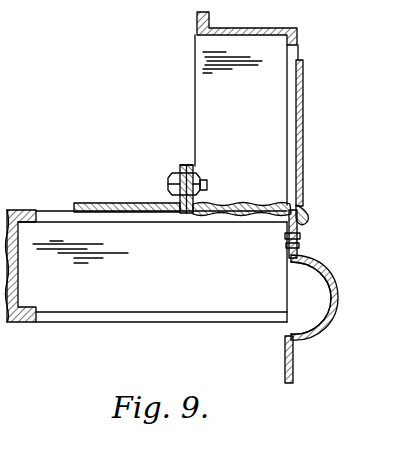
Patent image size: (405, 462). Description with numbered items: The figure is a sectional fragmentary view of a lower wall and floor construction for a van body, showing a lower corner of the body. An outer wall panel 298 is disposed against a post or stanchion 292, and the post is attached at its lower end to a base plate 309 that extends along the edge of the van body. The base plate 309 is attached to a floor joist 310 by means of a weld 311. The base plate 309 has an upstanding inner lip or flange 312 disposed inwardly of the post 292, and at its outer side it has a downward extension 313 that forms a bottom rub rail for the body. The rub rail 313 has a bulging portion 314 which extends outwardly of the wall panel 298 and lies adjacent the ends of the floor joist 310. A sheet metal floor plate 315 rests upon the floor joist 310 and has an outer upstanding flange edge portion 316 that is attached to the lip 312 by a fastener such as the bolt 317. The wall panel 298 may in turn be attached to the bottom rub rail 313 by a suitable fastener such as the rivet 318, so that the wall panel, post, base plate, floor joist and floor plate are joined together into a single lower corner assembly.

The post or stanchion 292 is at (196, 51).
The outer wall panel 298 is at (303, 142).
The base plate 309 is at (308, 210).
The floor joist 310 is at (211, 322).
The weld 311 is at (237, 225).
The inner lip or flange 312 is at (190, 168).
The bottom rub rail 313 is at (316, 260).
The bulging portion 314 is at (327, 290).
The sheet metal floor plate 315 is at (95, 204).
The upstanding flange edge portion 316 is at (184, 167).
The bolt 317 is at (168, 180).
The rivet 318 is at (305, 237).